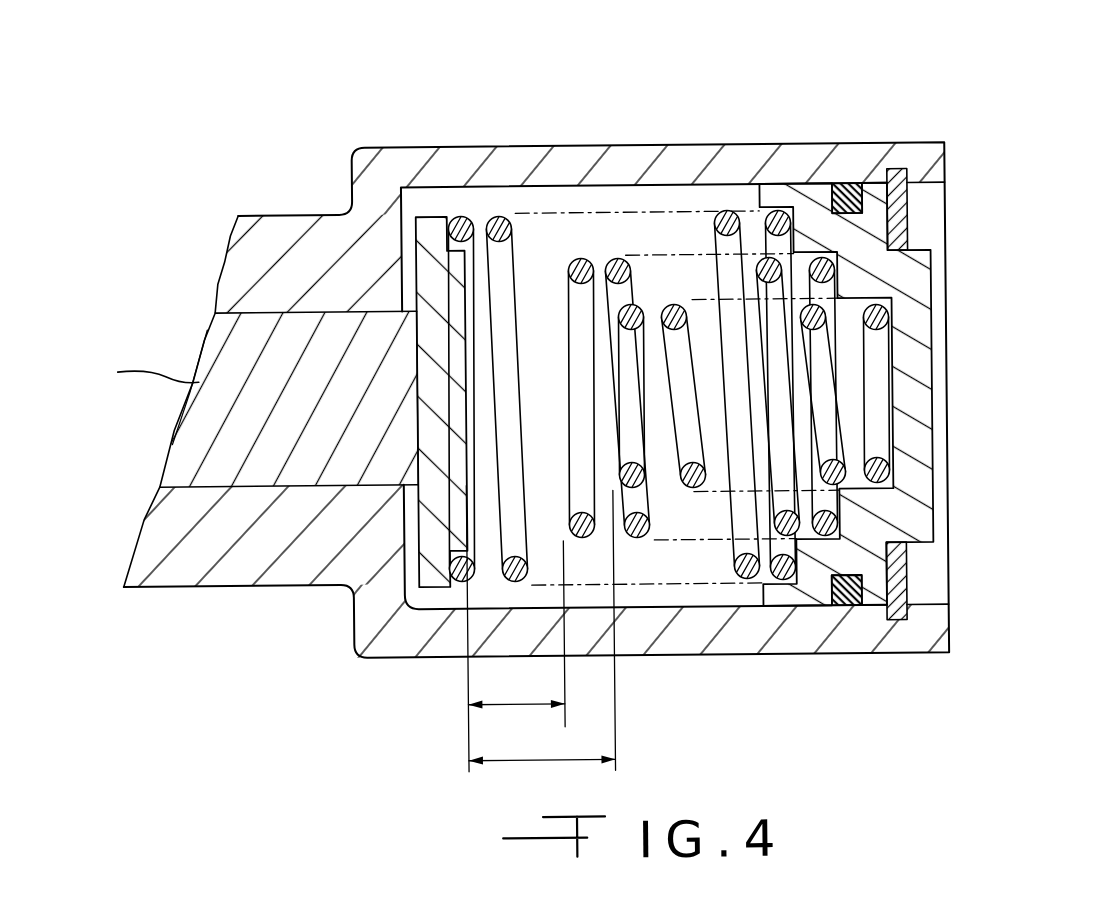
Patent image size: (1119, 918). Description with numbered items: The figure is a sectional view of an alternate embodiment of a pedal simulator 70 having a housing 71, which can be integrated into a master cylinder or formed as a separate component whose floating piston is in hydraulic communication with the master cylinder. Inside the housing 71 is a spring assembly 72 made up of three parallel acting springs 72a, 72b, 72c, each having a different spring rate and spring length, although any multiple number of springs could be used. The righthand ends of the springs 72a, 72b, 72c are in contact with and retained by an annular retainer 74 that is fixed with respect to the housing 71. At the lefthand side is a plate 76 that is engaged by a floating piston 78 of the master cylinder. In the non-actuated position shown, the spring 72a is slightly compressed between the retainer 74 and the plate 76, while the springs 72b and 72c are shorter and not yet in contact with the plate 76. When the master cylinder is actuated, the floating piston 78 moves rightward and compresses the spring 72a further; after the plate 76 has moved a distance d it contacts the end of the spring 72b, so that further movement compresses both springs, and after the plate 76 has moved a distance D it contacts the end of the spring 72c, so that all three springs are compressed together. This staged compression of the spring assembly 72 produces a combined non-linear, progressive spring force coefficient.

The pedal simulator 70 is at (945, 94).
The housing 71 is at (363, 164).
The spring assembly 72 is at (667, 402).
The spring 72a is at (461, 214).
The spring 72b is at (591, 257).
The spring 72c is at (642, 312).
The annular retainer 74 is at (909, 280).
The plate 76 is at (455, 370).
The floating piston 78 is at (204, 379).
The distance d is at (505, 703).
The distance D is at (533, 760).